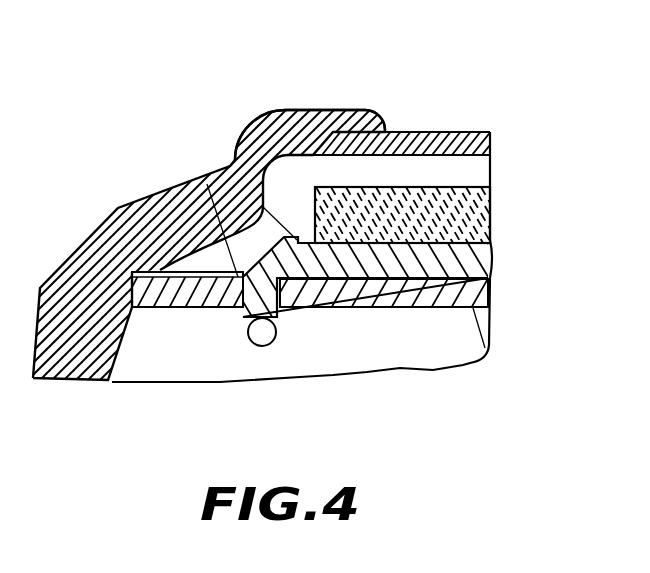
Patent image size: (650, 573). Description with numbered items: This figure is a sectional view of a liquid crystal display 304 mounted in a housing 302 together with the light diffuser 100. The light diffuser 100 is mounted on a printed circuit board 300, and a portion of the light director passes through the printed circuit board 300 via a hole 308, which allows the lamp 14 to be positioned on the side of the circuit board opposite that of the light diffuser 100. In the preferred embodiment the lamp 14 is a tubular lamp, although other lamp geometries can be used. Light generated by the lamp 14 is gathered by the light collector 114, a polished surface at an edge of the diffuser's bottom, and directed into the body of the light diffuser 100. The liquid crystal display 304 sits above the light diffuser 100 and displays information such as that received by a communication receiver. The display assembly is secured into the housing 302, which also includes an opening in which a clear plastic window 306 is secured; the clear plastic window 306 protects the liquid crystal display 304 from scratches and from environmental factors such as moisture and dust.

The lamp 14 is at (248, 333).
The light diffuser 100 is at (229, 165).
The light collector 114 is at (280, 322).
The printed circuit board 300 is at (485, 365).
The housing 302 is at (248, 127).
The liquid crystal display 304 is at (465, 185).
The clear plastic window 306 is at (408, 132).
The hole 308 is at (176, 190).